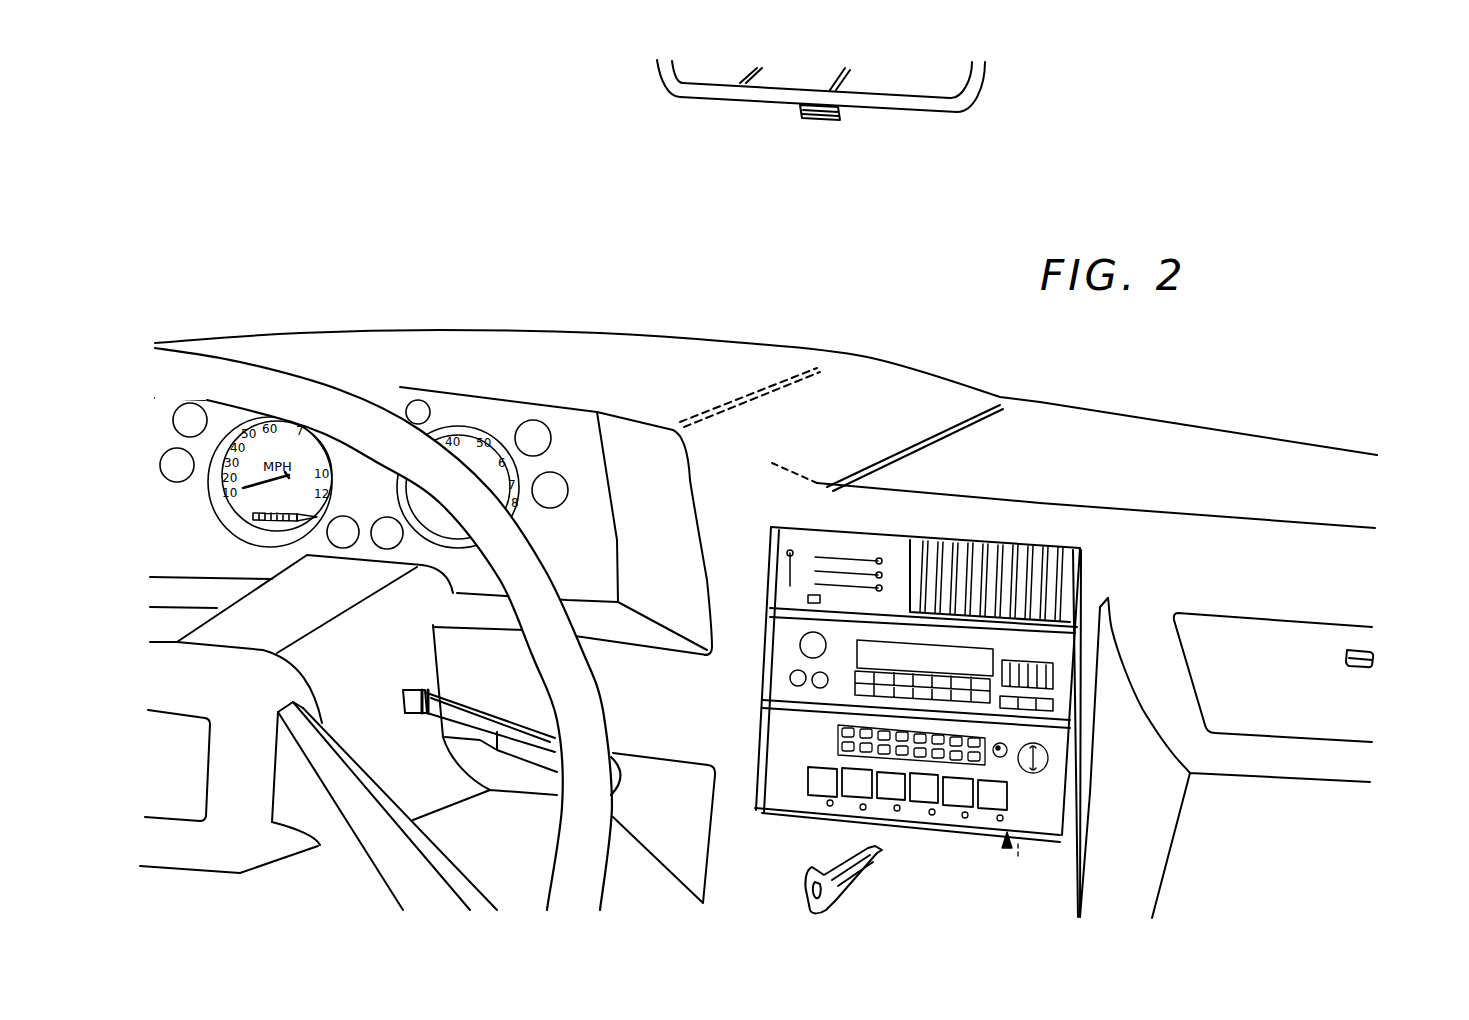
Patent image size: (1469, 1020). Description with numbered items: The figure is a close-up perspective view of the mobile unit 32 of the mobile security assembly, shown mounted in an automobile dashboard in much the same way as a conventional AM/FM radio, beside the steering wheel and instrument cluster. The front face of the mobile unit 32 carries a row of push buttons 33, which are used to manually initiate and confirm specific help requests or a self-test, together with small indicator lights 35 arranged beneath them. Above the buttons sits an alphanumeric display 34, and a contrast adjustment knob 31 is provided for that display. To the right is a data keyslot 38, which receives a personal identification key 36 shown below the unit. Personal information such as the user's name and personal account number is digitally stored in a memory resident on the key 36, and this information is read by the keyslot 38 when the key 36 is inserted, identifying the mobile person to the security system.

The contrast adjustment knob 31 is at (1005, 744).
The mobile unit 32 is at (1007, 846).
The push buttons 33 is at (850, 785).
The alphanumeric display 34 is at (838, 745).
The indicator lights 35 is at (897, 811).
The personal identification key 36 is at (850, 882).
The data keyslot 38 is at (1048, 762).